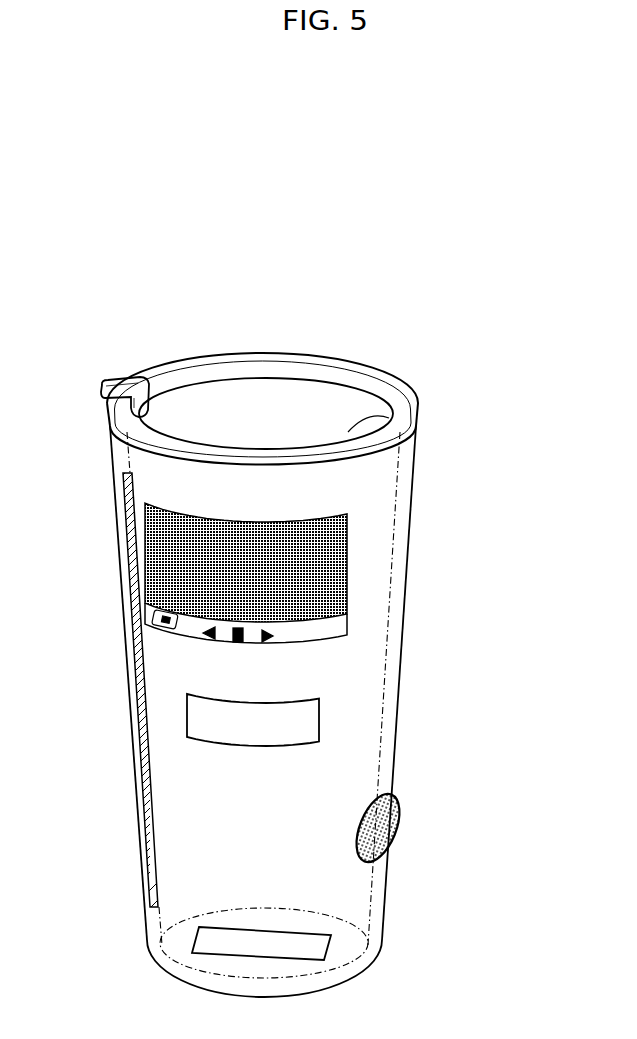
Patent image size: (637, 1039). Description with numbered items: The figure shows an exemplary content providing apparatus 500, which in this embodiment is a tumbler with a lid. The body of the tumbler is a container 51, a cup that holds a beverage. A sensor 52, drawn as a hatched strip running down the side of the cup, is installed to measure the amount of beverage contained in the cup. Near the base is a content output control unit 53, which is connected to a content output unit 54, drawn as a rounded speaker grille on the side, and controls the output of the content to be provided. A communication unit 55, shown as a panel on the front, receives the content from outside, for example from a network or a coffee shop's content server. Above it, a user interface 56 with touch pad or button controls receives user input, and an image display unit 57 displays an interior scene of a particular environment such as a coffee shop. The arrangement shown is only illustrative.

The content providing apparatus 500 is at (413, 328).
The container 51 is at (395, 502).
The sensor 52 is at (133, 653).
The content output control unit 53 is at (321, 930).
The content output unit 54 is at (398, 808).
The communication unit 55 is at (320, 720).
The user interface 56 is at (347, 624).
The image display unit 57 is at (347, 562).